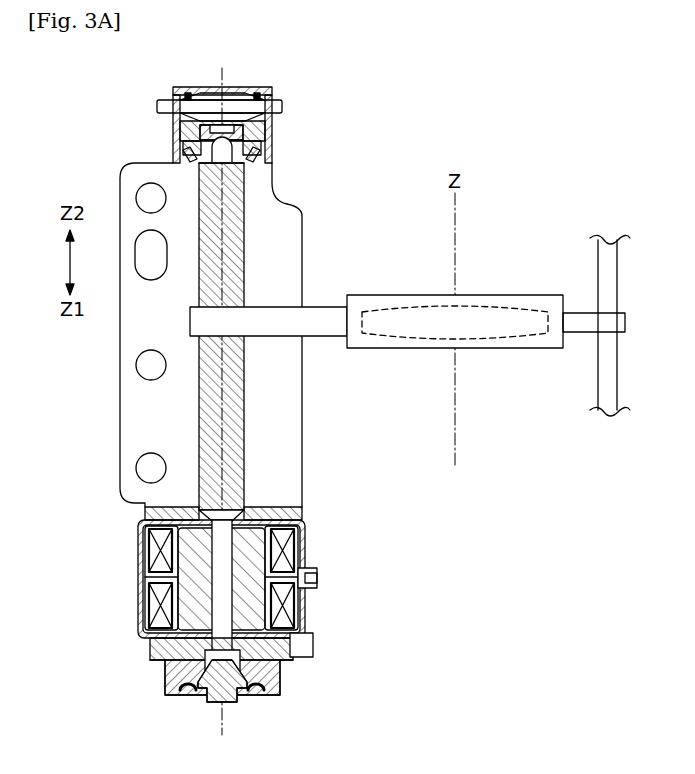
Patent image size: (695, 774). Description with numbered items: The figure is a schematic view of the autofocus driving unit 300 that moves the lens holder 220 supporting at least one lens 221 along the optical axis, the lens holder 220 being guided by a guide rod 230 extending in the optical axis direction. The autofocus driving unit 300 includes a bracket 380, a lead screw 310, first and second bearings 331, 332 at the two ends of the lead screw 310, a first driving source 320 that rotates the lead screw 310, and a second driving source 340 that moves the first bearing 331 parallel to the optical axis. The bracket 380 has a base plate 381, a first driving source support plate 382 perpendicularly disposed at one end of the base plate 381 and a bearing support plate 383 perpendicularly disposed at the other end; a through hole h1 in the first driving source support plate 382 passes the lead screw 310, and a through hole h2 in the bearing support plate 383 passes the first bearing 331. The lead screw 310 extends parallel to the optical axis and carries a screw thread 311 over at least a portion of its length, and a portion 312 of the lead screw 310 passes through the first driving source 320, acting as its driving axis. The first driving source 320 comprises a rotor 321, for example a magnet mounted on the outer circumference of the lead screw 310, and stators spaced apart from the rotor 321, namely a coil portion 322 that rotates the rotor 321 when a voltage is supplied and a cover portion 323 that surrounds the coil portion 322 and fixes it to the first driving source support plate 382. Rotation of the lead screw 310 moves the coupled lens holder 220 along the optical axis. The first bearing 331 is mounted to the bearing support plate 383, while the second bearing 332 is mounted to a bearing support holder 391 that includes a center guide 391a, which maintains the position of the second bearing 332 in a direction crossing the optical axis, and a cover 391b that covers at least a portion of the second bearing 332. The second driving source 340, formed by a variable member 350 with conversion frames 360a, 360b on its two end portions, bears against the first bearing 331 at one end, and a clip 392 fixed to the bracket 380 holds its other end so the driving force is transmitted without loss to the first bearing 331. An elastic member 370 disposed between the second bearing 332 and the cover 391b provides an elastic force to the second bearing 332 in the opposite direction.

The autofocus driving unit 300 is at (330, 678).
The lead screw 310 is at (246, 441).
The screw thread 311 is at (240, 398).
The portion of the lead screw 312 is at (232, 603).
The first driving source 320 is at (167, 578).
The rotor 321 is at (185, 573).
The coil portion 322 is at (160, 550).
The cover portion 323 is at (145, 530).
The first bearing 331 is at (180, 129).
The second bearing 332 is at (212, 700).
The second driving source 340 is at (285, 89).
The variable member 350 is at (283, 108).
The conversion frame 360a is at (283, 101).
The conversion frame 360b is at (283, 116).
The elastic member 370 is at (250, 692).
The bracket 380 is at (284, 268).
The base plate 381 is at (302, 218).
The first driving source support plate 382 is at (295, 512).
The bearing support plate 383 is at (262, 142).
The bearing support holder 391 is at (171, 664).
The center guide 391a is at (155, 650).
The cover 391b is at (160, 672).
The clip 392 is at (187, 88).
The lens holder 220 is at (518, 348).
The lens 221 is at (497, 305).
The guide rod 230 is at (614, 278).
The through hole h1 is at (240, 505).
The through hole h2 is at (178, 156).